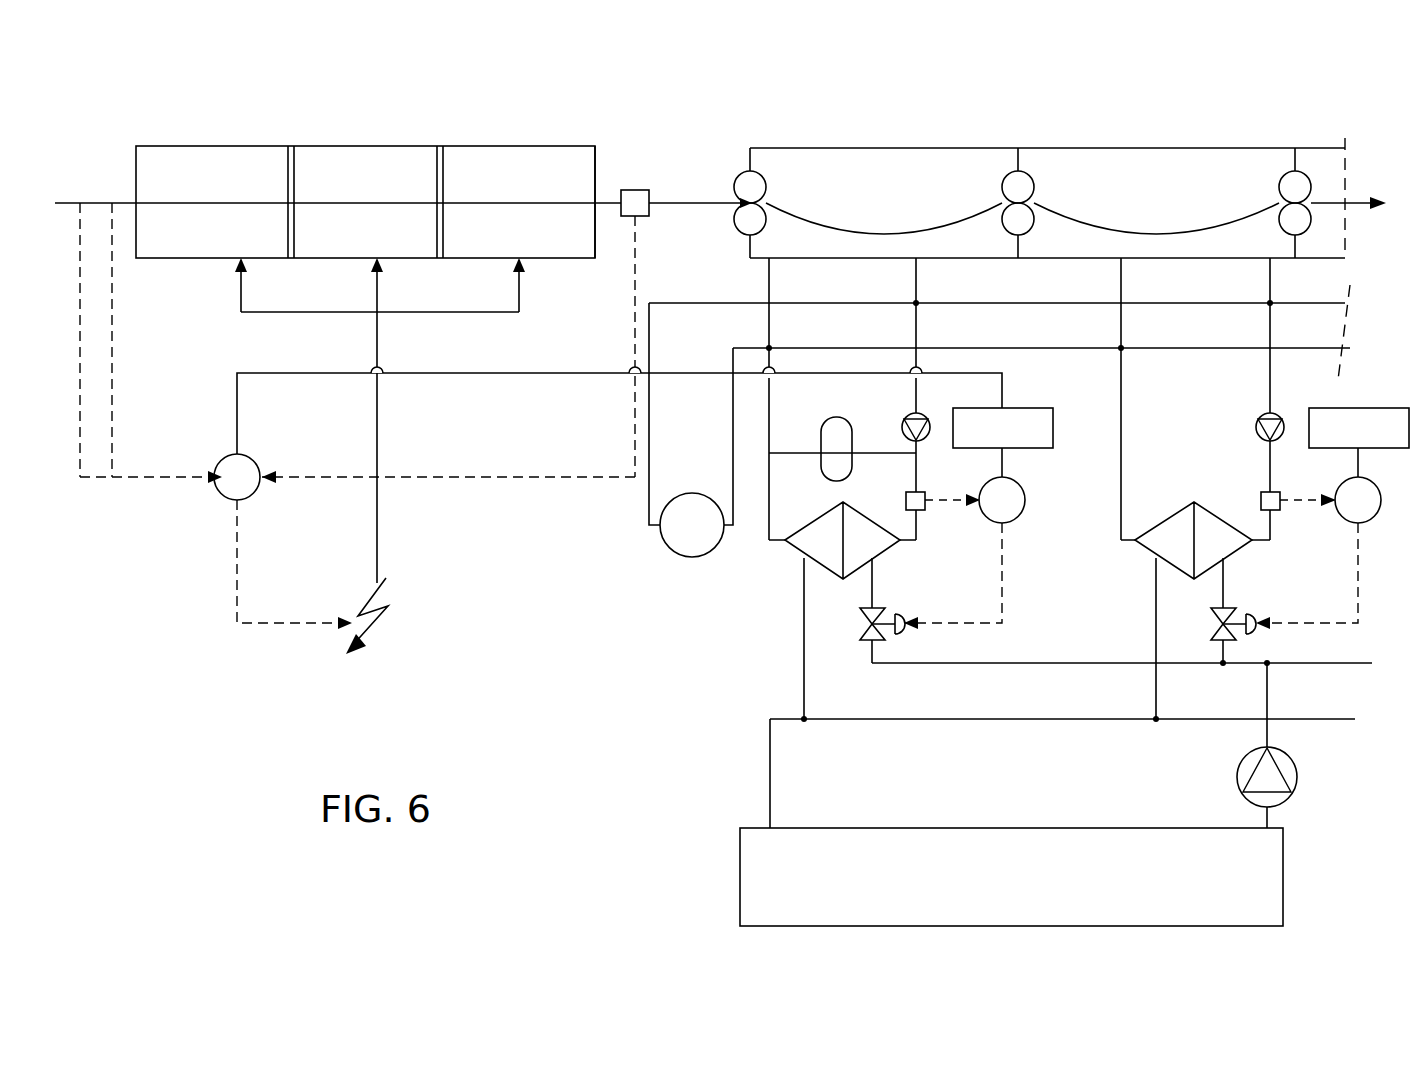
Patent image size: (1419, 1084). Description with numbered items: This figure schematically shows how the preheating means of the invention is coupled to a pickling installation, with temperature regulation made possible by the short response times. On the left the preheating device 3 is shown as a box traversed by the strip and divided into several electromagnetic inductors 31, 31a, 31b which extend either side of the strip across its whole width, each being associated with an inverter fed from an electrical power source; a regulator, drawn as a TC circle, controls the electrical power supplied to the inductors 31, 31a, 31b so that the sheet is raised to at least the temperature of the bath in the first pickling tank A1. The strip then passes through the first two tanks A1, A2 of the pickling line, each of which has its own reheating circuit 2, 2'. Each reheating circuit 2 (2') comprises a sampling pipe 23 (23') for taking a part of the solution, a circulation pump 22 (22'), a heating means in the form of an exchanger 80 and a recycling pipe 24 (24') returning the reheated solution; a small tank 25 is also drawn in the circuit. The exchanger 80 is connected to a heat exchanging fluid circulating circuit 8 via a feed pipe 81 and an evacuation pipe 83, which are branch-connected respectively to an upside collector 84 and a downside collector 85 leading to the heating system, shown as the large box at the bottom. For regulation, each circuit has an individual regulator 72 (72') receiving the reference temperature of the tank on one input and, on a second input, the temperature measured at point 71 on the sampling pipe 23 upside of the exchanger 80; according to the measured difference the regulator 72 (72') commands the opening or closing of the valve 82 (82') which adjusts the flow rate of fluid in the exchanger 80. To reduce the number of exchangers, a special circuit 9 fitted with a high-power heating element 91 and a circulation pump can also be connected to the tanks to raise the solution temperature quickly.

The preheating device 3 is at (233, 140).
The electromagnetic inductor 31 is at (251, 170).
The electromagnetic inductor 31a is at (378, 165).
The electromagnetic inductor 31b is at (525, 163).
The feed pipe 81 is at (638, 188).
The heat exchanging fluid circulating circuit 8 is at (214, 500).
The first pickling tank A1 is at (848, 138).
The second pickling tank A2 is at (1120, 138).
The recycling pipe 24 is at (733, 399).
The sampling pipe 23 is at (949, 399).
The recycling pipe 24' is at (1155, 399).
The sampling pipe 23' is at (1241, 399).
The high-power heating element 91 is at (692, 494).
The special circuit 9 is at (640, 550).
The reheating circuit 2 is at (822, 524).
The tank 25 is at (825, 426).
The circulation pump 22 is at (896, 415).
The exchanger 80 is at (812, 516).
The measurement point 71 is at (905, 505).
The individual regulator 72 is at (978, 518).
The evacuation pipe 83 is at (806, 633).
The valve 82 is at (863, 651).
The reheating circuit 2' is at (1169, 587).
The circulation pump 22' is at (1229, 421).
The individual regulator 72' is at (1337, 518).
The valve 82' is at (1218, 655).
The upside collector 84 is at (1078, 662).
The downside collector 85 is at (992, 722).